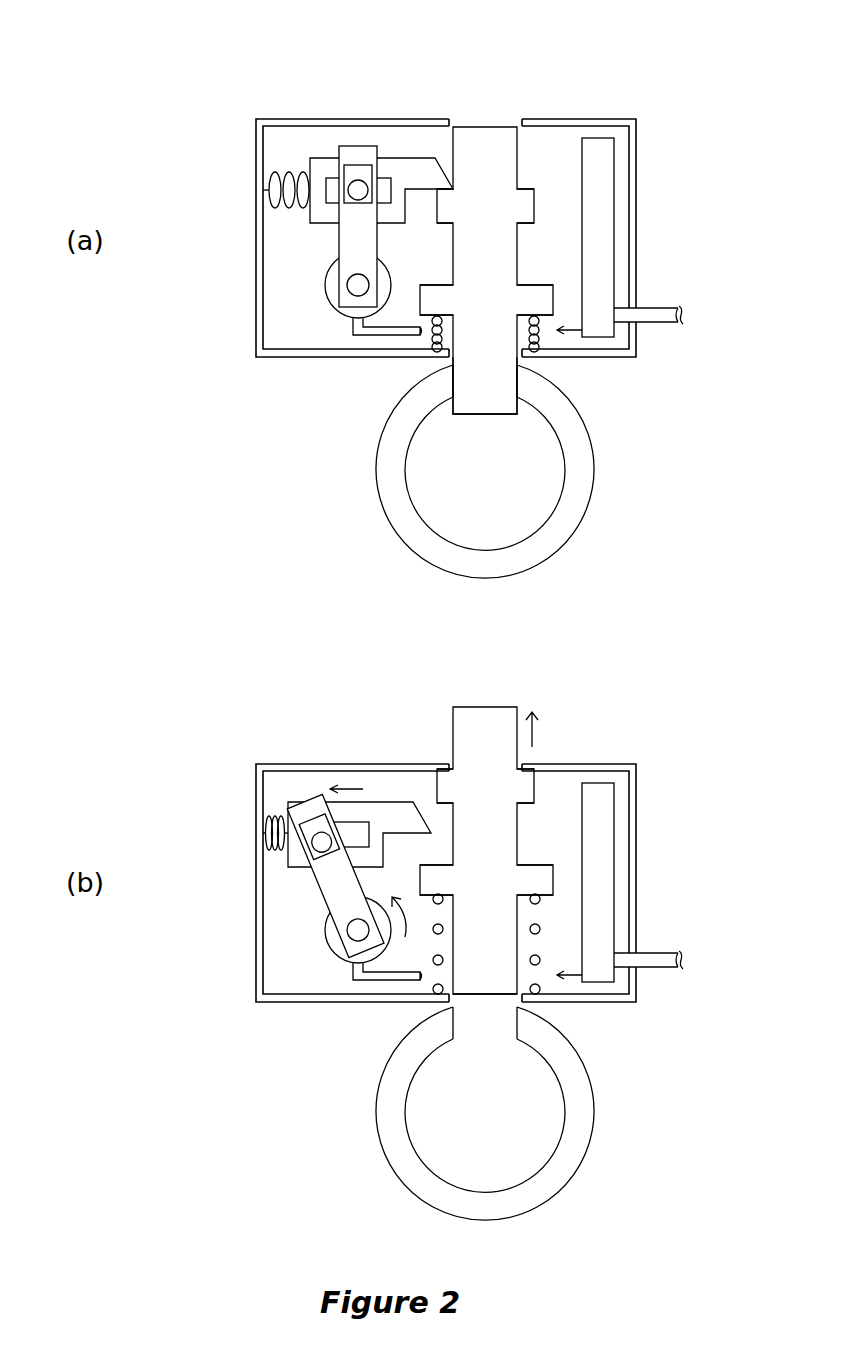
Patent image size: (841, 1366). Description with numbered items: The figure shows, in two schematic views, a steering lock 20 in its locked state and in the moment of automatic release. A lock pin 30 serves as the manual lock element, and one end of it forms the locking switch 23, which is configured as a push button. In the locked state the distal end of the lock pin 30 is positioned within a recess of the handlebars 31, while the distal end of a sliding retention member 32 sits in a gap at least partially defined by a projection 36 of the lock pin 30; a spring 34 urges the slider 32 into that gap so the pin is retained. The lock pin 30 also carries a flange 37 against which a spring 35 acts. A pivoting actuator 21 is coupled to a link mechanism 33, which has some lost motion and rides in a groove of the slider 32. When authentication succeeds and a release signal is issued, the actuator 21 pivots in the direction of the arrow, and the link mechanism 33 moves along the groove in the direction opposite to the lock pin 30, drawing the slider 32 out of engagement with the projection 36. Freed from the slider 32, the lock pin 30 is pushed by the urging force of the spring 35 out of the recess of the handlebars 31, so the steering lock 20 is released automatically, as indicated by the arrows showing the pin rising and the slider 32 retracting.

The steering lock 20 is at (629, 76).
The actuator 21 is at (330, 293).
The locking switch 23 is at (487, 125).
The lock pin 30 is at (487, 382).
The handlebars 31 is at (596, 488).
The sliding retention member 32 is at (405, 157).
The link mechanism 33 is at (358, 145).
The spring 34 is at (273, 177).
The spring 35 is at (540, 338).
The projection 36 is at (450, 209).
The flange 37 is at (448, 306).